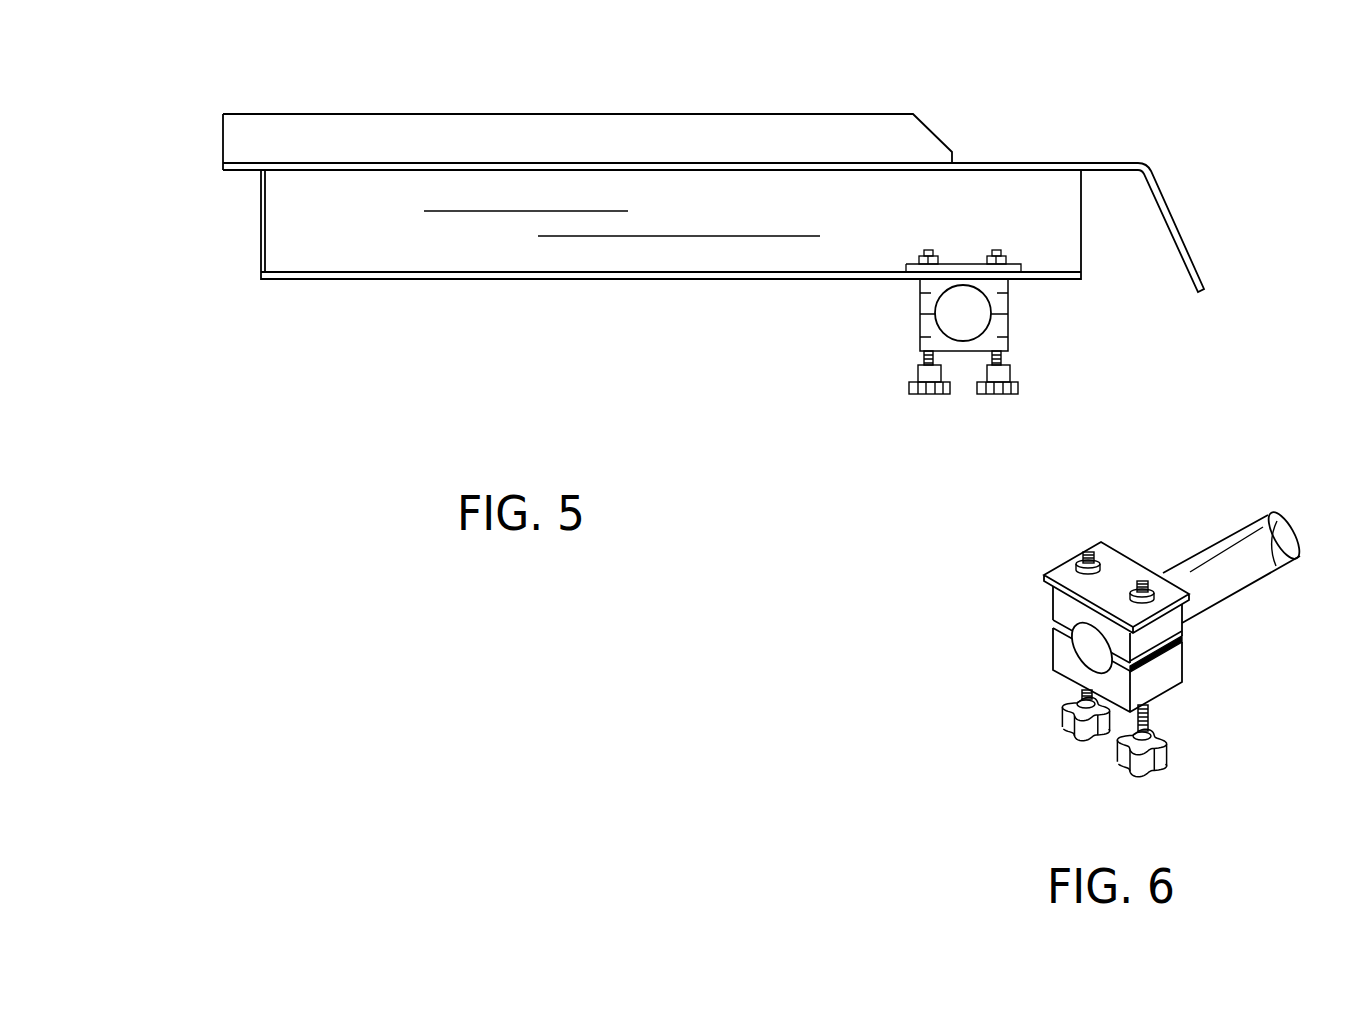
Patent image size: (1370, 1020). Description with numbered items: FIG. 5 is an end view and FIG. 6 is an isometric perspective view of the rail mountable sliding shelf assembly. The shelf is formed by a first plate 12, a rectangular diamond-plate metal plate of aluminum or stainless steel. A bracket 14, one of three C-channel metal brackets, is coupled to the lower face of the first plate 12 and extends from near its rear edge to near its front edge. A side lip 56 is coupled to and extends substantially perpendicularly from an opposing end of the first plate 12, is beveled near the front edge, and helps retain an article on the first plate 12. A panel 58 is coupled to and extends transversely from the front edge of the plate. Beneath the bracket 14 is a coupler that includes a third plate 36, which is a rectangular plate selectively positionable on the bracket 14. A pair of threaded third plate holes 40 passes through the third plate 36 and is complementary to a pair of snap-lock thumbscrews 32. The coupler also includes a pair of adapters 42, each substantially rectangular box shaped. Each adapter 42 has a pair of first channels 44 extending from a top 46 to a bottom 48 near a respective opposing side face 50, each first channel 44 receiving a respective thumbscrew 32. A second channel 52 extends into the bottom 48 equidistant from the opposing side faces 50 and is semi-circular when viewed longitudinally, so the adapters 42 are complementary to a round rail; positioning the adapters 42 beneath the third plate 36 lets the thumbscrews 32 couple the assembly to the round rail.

In FIG. 5, the first plate 12 is at (1003, 163).
In FIG. 5, the bracket 14 is at (565, 200).
In FIG. 5, the thumbscrew 32 is at (1000, 393).
In FIG. 6, the thumbscrew 32 is at (1140, 763).
In FIG. 6, the third plate 36 is at (1065, 576).
In FIG. 6, the third plate hole 40 is at (1152, 590).
In FIG. 5, the adapter 42 is at (1000, 338).
In FIG. 5, the first channel 44 is at (927, 338).
In FIG. 6, the first channel 44 is at (1160, 632).
In FIG. 6, the top 46 is at (1163, 693).
In FIG. 6, the bottom 48 is at (1155, 663).
In FIG. 6, the opposing side face 50 is at (1143, 678).
In FIG. 5, the second channel 52 is at (971, 323).
In FIG. 6, the second channel 52 is at (1085, 640).
In FIG. 5, the side lip 56 is at (448, 138).
In FIG. 5, the panel 58 is at (1173, 218).